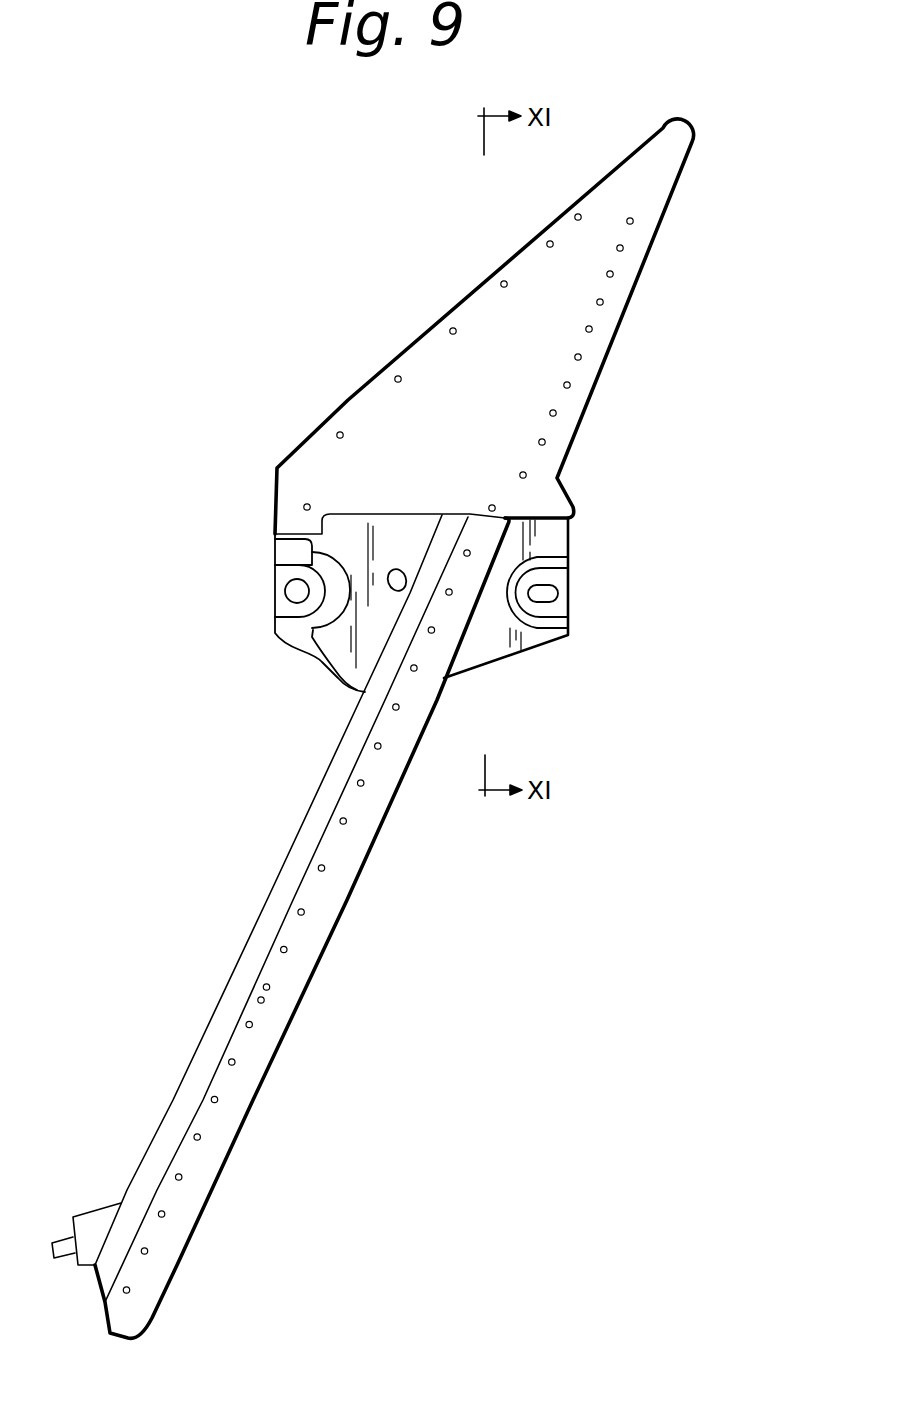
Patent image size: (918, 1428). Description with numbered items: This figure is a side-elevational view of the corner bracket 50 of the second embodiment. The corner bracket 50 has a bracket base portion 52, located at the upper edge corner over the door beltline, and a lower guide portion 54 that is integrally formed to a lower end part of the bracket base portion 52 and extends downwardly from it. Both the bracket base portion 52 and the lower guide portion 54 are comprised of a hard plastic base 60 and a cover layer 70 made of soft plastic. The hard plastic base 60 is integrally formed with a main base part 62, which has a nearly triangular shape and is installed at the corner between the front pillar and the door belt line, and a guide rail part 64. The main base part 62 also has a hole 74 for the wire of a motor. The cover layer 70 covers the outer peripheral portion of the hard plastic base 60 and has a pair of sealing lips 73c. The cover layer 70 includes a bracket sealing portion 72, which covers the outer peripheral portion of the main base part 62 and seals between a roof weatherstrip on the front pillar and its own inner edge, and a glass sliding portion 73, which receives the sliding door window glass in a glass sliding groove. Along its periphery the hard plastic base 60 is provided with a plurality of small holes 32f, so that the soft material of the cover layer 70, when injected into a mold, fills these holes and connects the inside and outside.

The corner bracket 50 is at (364, 352).
The bracket base portion 52 is at (648, 287).
The lower guide portion 54 is at (280, 926).
The hard plastic base 60 is at (545, 608).
The main base part 62 is at (553, 534).
The guide rail part 64 is at (216, 1136).
The cover layer 70 is at (289, 979).
The bracket sealing portion 72 is at (343, 407).
The glass sliding portion 73 is at (369, 819).
The sealing lips 73c is at (361, 872).
The hole 74 is at (398, 569).
The small holes 32f is at (264, 1003).